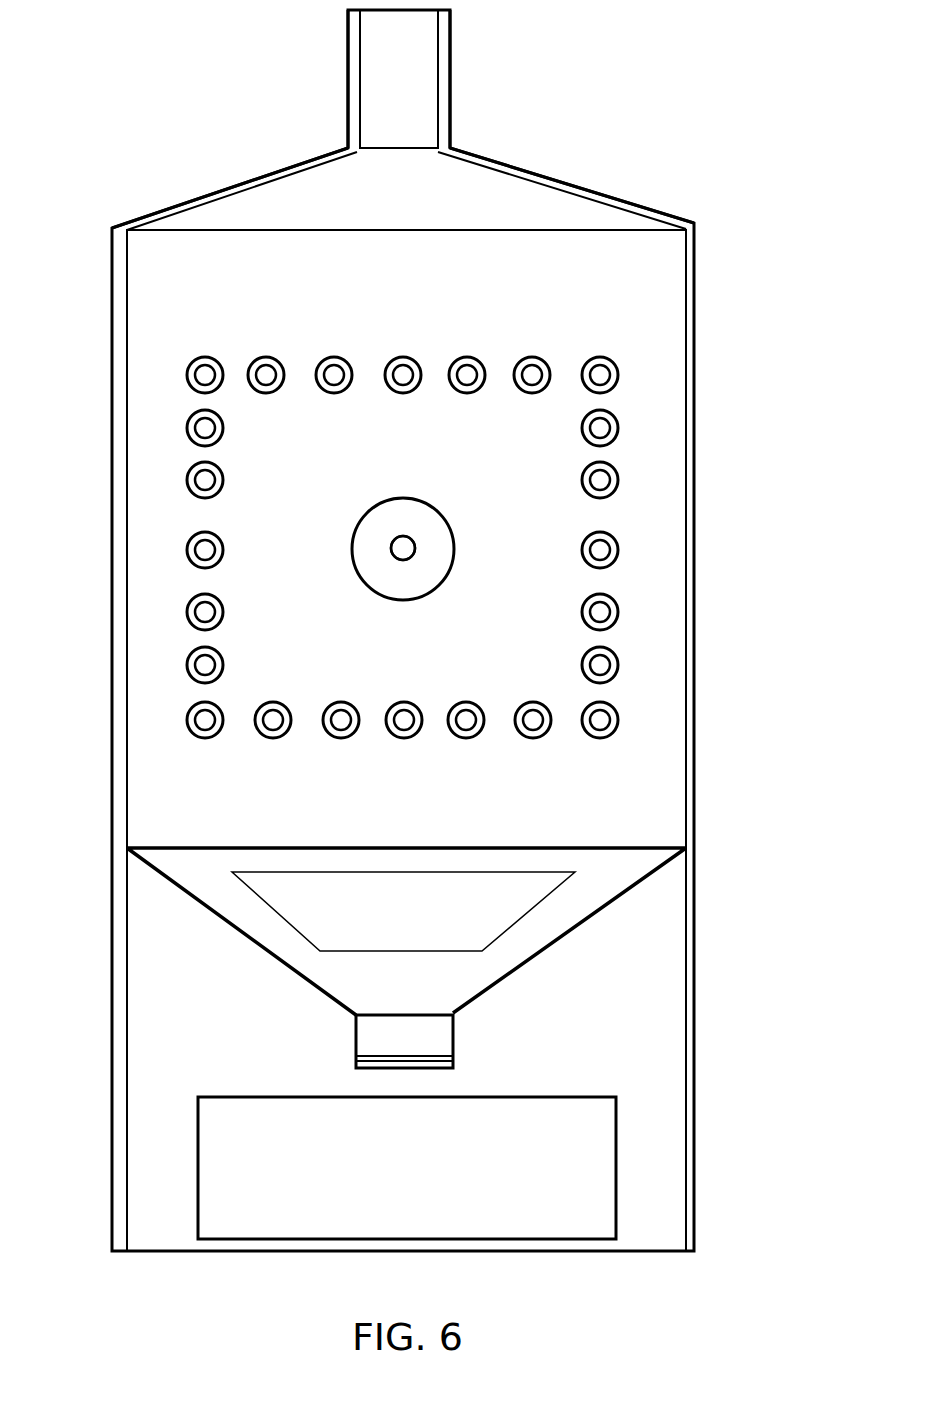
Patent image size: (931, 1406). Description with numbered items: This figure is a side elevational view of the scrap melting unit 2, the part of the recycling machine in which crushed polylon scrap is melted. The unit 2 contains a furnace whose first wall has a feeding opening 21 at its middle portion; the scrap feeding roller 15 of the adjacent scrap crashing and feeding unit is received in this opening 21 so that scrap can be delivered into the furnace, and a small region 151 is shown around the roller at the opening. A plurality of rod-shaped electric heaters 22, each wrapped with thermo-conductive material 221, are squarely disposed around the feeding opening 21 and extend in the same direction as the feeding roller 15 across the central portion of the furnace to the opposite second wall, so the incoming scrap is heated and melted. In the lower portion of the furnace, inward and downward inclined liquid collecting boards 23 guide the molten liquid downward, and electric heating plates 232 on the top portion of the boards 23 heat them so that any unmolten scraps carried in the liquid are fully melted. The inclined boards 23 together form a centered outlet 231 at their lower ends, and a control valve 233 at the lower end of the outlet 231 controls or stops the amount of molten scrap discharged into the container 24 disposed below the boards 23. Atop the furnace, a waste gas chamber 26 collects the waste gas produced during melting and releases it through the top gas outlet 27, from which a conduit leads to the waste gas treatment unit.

The scrap melting unit 2 is at (703, 468).
The scrap feeding roller 15 is at (408, 545).
The ignition plate 151 is at (372, 518).
The feeding opening 21 is at (406, 548).
The rod-shaped electric heaters 22 is at (462, 370).
The thermo-conductive material 221 is at (474, 364).
The liquid collecting boards 23 is at (275, 958).
The centered outlet 231 is at (380, 1035).
The electric heating plates 232 is at (527, 915).
The control valve 233 is at (455, 1057).
The container 24 is at (540, 1130).
The waste gas chamber 26 is at (525, 215).
The top gas outlet 27 is at (385, 148).